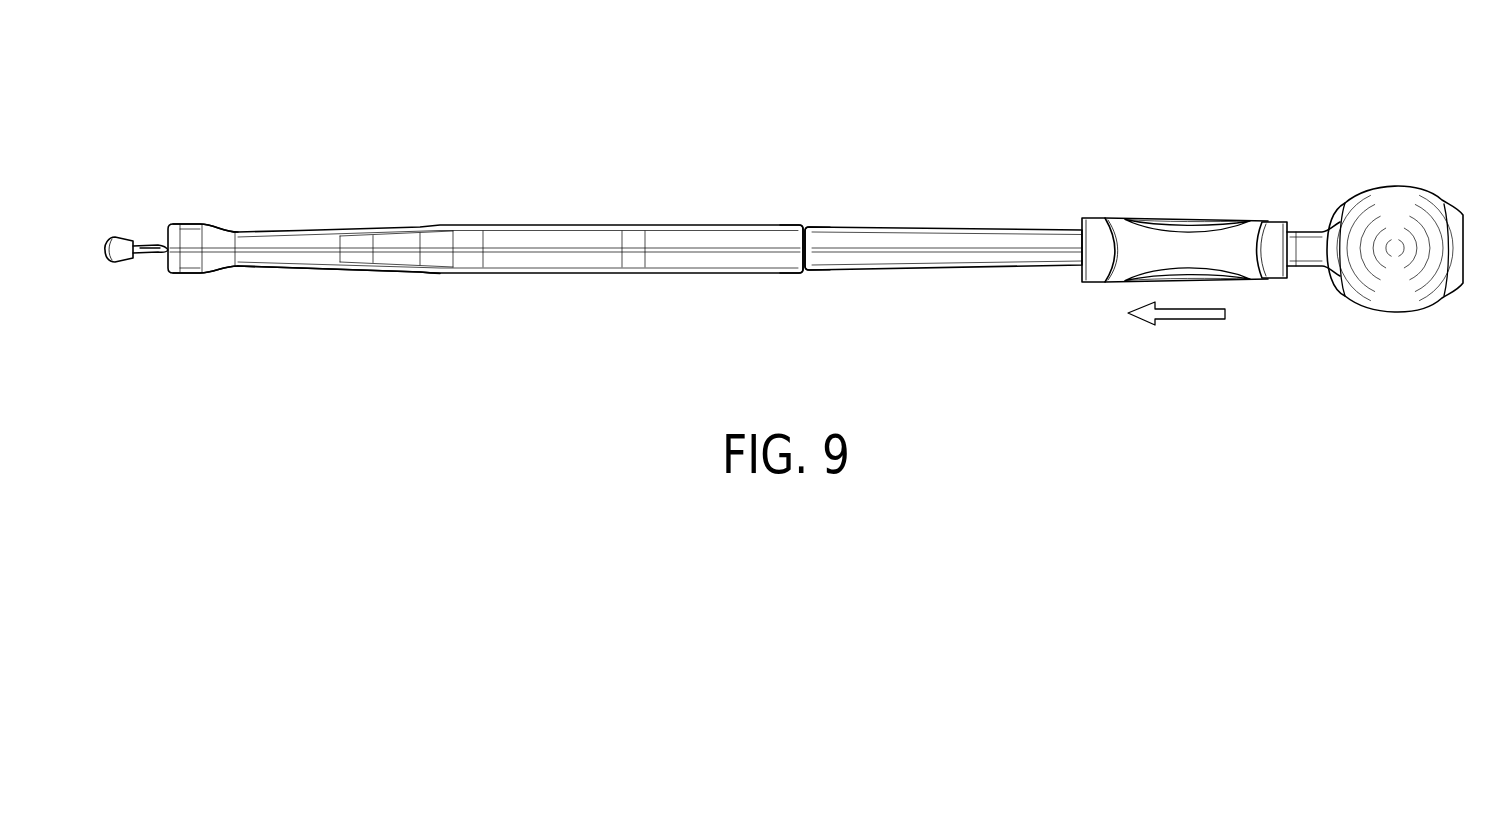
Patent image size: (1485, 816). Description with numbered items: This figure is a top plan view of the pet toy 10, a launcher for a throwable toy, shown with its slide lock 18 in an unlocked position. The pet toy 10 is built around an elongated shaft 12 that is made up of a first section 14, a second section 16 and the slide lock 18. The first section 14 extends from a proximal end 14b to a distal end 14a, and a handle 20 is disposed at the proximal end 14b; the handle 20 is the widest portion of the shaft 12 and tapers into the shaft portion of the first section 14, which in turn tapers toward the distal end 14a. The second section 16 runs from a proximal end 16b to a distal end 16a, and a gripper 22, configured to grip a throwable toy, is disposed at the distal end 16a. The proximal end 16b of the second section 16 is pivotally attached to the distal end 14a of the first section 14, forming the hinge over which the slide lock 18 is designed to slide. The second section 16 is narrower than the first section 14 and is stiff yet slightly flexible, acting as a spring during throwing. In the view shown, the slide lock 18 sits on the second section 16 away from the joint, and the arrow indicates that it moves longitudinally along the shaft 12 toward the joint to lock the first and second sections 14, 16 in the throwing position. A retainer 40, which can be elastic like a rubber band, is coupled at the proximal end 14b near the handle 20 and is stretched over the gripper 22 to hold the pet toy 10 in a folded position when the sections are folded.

The pet toy 10 is at (863, 90).
The elongated shaft 12 is at (587, 218).
The first section 14 is at (423, 275).
The distal end of the first section 14a is at (781, 224).
The proximal end of the first section 14b is at (185, 224).
The second section 16 is at (951, 228).
The distal end of the second section 16a is at (1317, 232).
The proximal end of the second section 16b is at (838, 272).
The slide lock 18 is at (1100, 217).
The handle 20 is at (295, 275).
The gripper 22 is at (1394, 313).
The retainer 40 is at (121, 236).